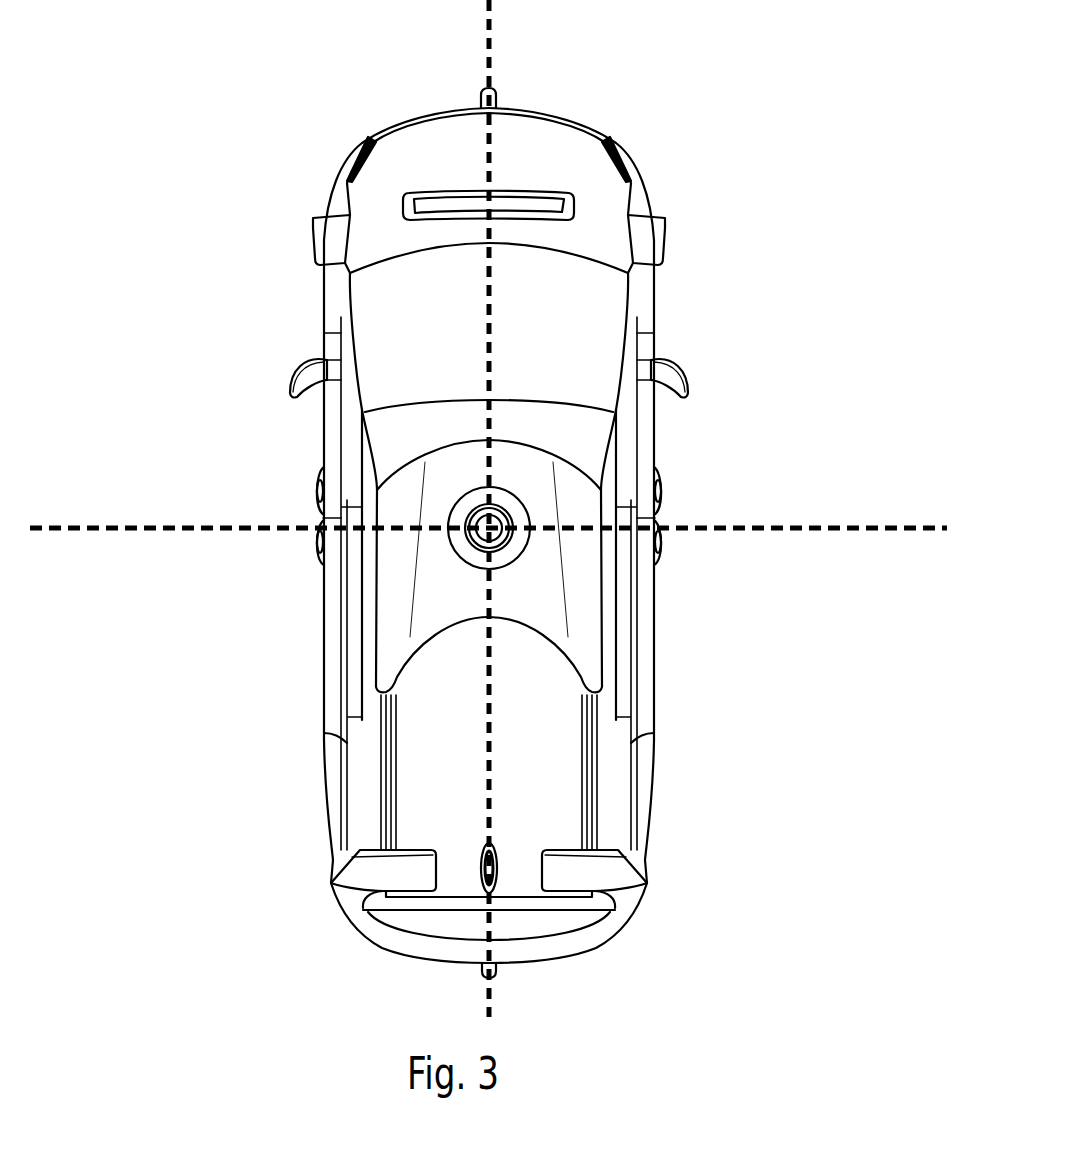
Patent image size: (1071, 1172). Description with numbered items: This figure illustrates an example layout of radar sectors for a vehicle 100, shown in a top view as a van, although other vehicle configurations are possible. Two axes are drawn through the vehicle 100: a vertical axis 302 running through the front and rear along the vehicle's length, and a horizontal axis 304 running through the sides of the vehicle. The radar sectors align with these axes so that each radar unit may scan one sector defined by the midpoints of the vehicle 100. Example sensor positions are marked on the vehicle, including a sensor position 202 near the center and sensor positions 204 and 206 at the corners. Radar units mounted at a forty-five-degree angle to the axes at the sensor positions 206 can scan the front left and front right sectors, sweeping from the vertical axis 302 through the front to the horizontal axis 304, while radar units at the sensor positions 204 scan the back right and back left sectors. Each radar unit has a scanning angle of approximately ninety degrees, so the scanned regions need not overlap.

The vehicle 100 is at (240, 79).
The sensor position 202 is at (493, 518).
The sensor positions 204 is at (331, 885).
The sensor positions 206 is at (317, 240).
The vertical axis 302 is at (489, 13).
The horizontal axis 304 is at (153, 530).